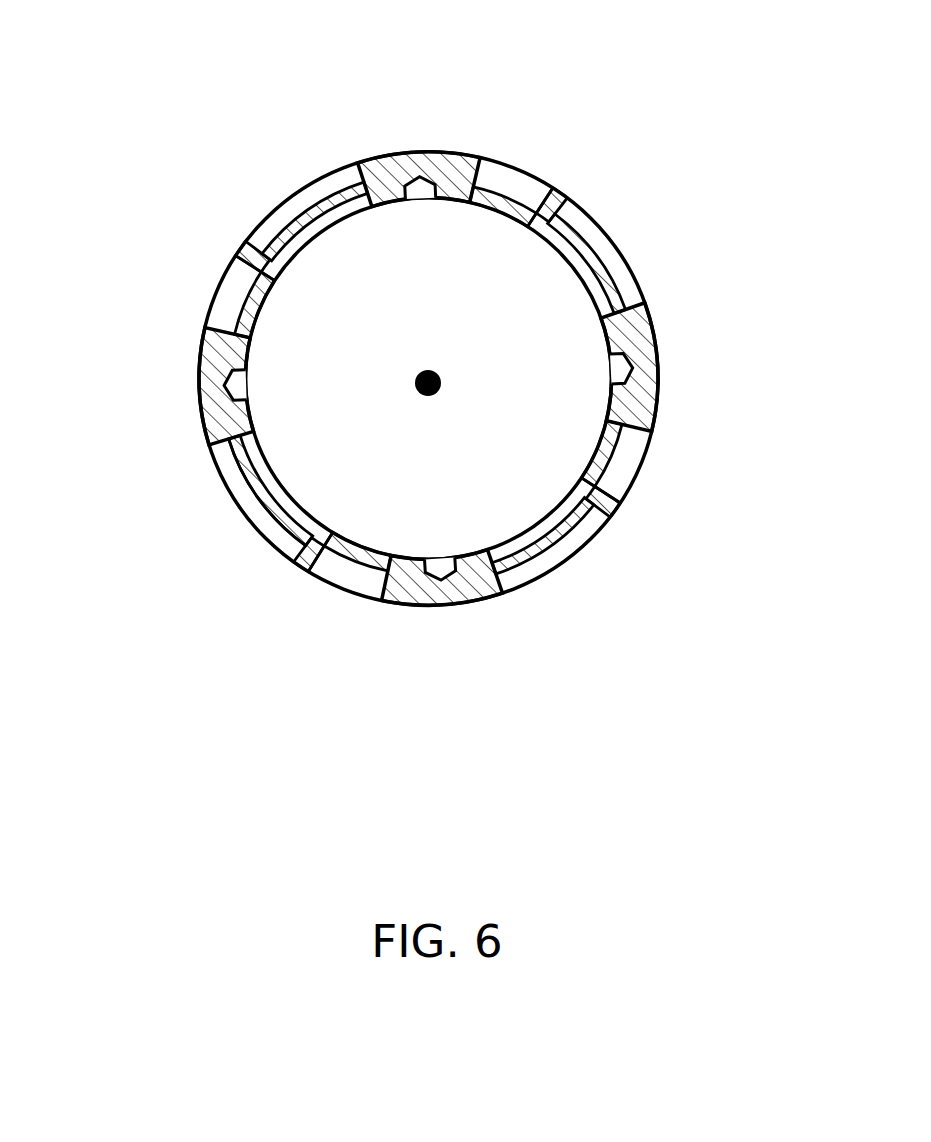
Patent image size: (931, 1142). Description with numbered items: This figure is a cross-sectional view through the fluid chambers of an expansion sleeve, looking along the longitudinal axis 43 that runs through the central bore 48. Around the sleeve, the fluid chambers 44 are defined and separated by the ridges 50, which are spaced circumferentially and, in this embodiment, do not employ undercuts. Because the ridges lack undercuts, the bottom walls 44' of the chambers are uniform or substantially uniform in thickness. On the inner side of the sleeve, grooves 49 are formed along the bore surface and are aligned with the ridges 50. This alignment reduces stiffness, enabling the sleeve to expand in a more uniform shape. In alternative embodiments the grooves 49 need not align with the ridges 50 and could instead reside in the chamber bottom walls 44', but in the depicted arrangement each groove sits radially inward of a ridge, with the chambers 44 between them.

The longitudinal axis 43 is at (428, 378).
The bore 48 is at (428, 378).
The fluid chambers 44 is at (438, 375).
The bottom walls 44' is at (341, 492).
The grooves 49 is at (238, 388).
The ridges 50 is at (428, 151).